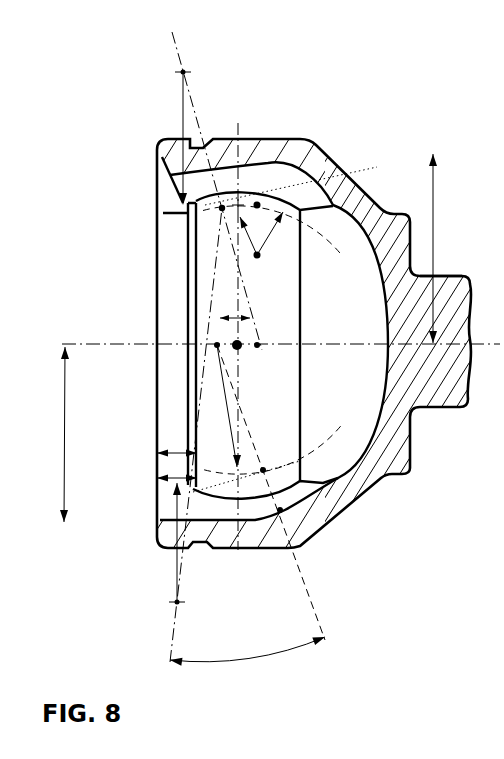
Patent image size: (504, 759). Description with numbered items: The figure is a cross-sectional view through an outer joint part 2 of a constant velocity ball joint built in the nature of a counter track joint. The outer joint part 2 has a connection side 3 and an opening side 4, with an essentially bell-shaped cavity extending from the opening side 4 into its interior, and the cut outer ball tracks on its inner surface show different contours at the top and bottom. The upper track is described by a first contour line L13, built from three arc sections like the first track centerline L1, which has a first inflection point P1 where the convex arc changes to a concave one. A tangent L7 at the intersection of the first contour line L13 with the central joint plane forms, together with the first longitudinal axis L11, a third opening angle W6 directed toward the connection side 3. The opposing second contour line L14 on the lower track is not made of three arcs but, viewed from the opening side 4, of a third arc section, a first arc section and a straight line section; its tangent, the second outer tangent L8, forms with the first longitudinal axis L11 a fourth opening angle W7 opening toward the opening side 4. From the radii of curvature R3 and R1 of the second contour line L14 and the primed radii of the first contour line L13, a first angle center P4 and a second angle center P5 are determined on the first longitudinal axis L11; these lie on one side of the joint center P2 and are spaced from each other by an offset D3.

The outer joint part 2 is at (312, 152).
The connection side 3 is at (450, 276).
The opening side 4 is at (145, 160).
The tangent L7 is at (365, 152).
The third opening angle W6 is at (440, 270).
The first contour line L13 is at (178, 208).
The first inflection point P1 is at (222, 208).
The offset D3 is at (228, 312).
The fourth opening angle W7 is at (60, 436).
The first angle center P4 is at (213, 340).
The second angle center P5 is at (257, 343).
The radius of curvature R1 is at (232, 416).
The joint center P2 is at (240, 347).
The second contour line L14 is at (177, 477).
The first longitudinal axis L11 is at (405, 347).
The second outer tangent L8 is at (110, 512).
The radius of curvature R3 is at (152, 555).
The first track centerline L1 is at (240, 565).